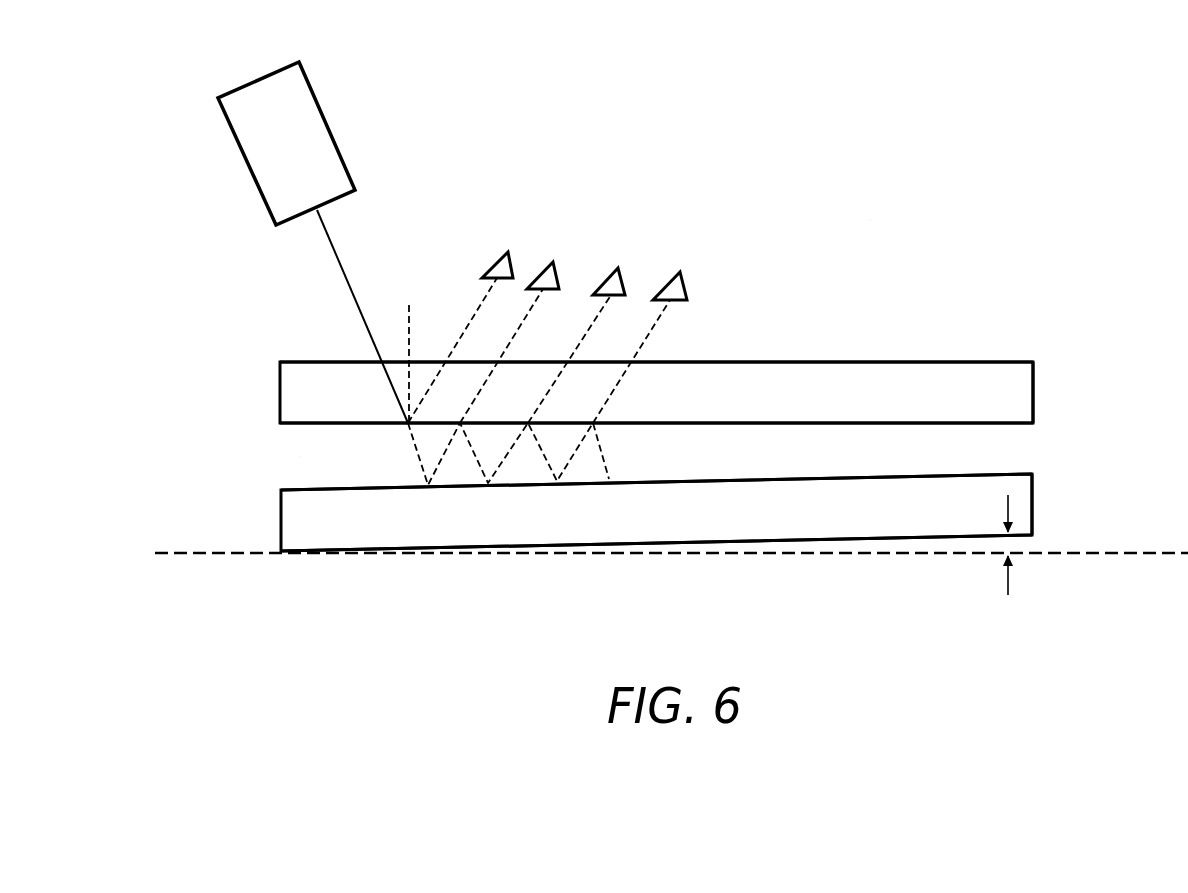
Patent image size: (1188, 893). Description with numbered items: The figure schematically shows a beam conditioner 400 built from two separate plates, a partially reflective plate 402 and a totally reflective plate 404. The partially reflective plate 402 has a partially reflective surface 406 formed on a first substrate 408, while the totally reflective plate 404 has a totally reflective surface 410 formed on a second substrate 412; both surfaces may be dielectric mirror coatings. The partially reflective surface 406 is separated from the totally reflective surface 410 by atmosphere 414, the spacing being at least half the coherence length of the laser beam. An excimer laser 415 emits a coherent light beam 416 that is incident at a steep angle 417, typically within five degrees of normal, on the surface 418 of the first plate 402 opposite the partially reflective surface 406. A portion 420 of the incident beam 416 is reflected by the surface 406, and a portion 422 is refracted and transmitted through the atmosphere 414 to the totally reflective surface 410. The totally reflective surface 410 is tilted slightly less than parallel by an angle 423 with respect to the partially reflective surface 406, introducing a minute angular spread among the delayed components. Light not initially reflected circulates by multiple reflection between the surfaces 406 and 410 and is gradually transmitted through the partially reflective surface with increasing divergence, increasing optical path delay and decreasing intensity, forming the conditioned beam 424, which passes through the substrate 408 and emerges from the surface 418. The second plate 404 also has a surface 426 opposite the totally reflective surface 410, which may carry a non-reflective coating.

The beam conditioner 400 is at (872, 218).
The partially reflective plate 402 is at (1035, 385).
The totally reflective plate 404 is at (1033, 503).
The partially reflective surface 406 is at (943, 424).
The first substrate 408 is at (996, 377).
The totally reflective surface 410 is at (1013, 472).
The second substrate 412 is at (852, 504).
The atmosphere 414 is at (295, 458).
The excimer laser 415 is at (337, 138).
The coherent light beam 416 is at (340, 265).
The angle of incidence 417 is at (389, 342).
The surface 418 is at (789, 360).
The reflected portion 420 is at (518, 247).
The transmitted portion 422 is at (417, 448).
The angle 423 is at (671, 589).
The conditioned beam 424 is at (561, 297).
The surface 426 is at (1018, 536).